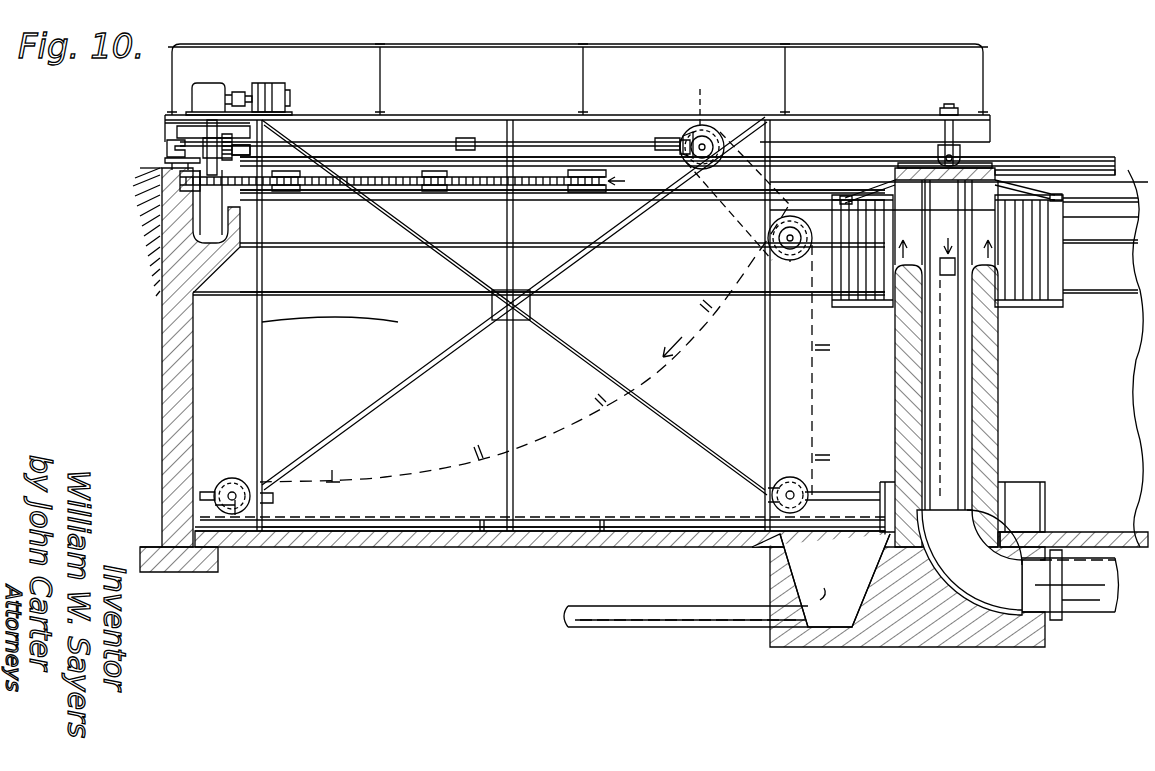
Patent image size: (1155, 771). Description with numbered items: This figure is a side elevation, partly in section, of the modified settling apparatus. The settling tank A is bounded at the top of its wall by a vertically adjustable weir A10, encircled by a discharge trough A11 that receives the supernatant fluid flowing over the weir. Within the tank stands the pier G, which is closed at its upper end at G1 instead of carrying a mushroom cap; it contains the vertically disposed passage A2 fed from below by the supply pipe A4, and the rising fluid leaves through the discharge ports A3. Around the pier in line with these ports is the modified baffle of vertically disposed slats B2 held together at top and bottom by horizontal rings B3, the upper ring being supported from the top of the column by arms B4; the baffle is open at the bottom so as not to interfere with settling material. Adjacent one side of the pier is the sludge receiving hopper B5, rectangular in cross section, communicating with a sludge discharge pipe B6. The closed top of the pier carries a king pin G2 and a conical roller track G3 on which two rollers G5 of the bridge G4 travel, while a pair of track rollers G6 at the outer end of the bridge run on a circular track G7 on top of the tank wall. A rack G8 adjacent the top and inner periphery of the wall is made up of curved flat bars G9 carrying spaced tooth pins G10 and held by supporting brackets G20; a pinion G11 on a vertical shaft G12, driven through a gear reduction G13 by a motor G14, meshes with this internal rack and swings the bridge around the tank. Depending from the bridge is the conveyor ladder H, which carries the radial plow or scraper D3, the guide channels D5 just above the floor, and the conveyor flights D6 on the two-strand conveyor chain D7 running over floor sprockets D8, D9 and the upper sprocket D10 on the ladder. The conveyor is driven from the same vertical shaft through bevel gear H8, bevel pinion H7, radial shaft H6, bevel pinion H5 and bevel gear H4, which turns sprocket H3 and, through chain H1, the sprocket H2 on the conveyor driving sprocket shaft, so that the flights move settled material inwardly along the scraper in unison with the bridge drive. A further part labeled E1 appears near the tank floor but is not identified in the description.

The settling tank A is at (165, 372).
The vertically disposed passage A2 is at (962, 404).
The discharge ports A3 is at (947, 345).
The supply pipe A4 is at (1090, 612).
The weir A10 is at (275, 200).
The discharge trough A11 is at (155, 250).
The vertically disposed slats B2 is at (862, 290).
The horizontal rings B3 is at (1062, 200).
The arms B4 is at (870, 190).
The sludge receiving hopper B5 is at (836, 612).
The sludge discharge pipe B6 is at (668, 622).
The plow, scraper or screed D3 is at (846, 494).
The guide channels D5 is at (446, 524).
The conveyor flights D6 is at (700, 312).
The two-strand conveyor chain D7 is at (808, 378).
The sprocket D8 is at (790, 478).
The sprocket D9 is at (234, 478).
The sprocket D10 is at (790, 262).
The outlet pipe E1 is at (1035, 500).
The pier G is at (990, 372).
The closed upper end of pier G1 is at (992, 168).
The king pin G2 is at (948, 106).
The conical roller track G3 is at (905, 164).
The rollers G5 is at (940, 160).
The bridge G4 is at (598, 128).
The track rollers G6 is at (168, 147).
The circular track G7 is at (166, 163).
The rack G8 is at (120, 226).
The curved flat bars G9 is at (280, 178).
The tooth pins G10 is at (395, 186).
The pinion G11 is at (213, 180).
The vertical shaft G12 is at (205, 140).
The gear reduction G13 is at (210, 90).
The motor G14 is at (268, 88).
The supporting brackets G20 is at (192, 188).
The conveyor ladder H is at (505, 352).
The chain H1 is at (755, 222).
The sprocket H2 is at (780, 218).
The sprocket H3 is at (708, 140).
The bevel gear H4 is at (699, 93).
The bevel pinion H5 is at (686, 138).
The radial shaft H6 is at (405, 142).
The bevel pinion H7 is at (262, 144).
The bevel gear H8 is at (205, 138).